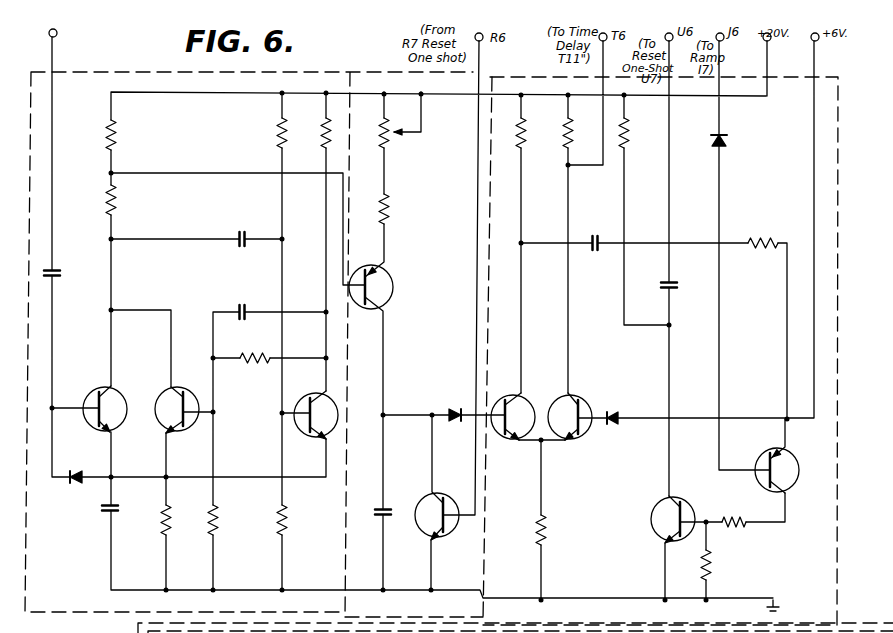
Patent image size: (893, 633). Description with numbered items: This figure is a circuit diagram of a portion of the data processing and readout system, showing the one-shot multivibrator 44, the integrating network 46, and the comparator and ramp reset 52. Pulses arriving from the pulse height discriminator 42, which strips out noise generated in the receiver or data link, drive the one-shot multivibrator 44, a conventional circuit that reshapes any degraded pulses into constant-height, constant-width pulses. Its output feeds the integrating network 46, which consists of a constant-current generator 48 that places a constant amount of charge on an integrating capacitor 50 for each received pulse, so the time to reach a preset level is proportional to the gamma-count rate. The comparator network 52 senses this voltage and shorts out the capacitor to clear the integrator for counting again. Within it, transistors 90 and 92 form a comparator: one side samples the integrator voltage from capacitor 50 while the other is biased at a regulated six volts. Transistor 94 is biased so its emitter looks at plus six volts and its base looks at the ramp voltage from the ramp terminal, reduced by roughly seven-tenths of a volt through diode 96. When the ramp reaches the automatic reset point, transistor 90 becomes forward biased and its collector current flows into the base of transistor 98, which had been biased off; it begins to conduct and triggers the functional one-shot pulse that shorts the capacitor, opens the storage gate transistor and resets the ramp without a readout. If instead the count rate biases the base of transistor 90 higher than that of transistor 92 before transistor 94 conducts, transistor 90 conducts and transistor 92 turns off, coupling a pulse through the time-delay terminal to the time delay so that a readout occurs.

The pulse height discriminator 42 is at (94, 41).
The one-shot multivibrator 44 is at (249, 344).
The integrating network 46 is at (418, 351).
The constant-current generator 48 is at (405, 318).
The integrating capacitor 50 is at (386, 504).
The comparator network 52 is at (660, 351).
The transistor 90 is at (500, 395).
The transistor 92 is at (574, 396).
The transistor 94 is at (788, 458).
The diode 96 is at (728, 135).
The transistor 98 is at (690, 511).